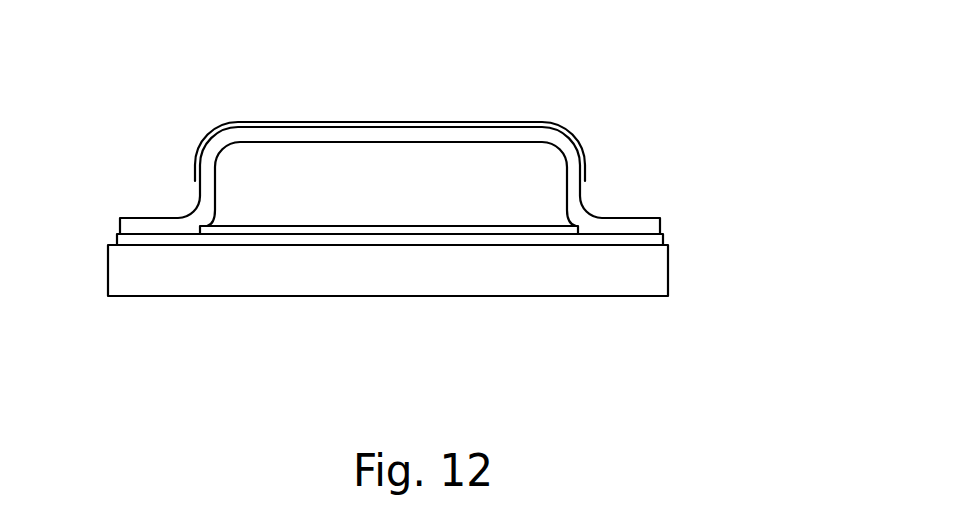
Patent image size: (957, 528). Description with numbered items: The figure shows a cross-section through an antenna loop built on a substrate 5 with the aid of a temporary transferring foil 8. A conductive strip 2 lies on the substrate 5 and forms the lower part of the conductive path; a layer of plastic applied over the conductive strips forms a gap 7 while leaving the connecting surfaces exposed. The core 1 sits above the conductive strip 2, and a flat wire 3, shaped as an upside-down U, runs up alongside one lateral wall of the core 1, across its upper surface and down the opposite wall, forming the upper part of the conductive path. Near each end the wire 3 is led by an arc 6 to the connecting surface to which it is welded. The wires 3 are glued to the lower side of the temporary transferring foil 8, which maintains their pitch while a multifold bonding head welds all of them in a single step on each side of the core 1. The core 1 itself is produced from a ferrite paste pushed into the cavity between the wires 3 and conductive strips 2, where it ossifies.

The core 1 is at (243, 170).
The conductive strip 2 is at (647, 240).
The wire 3 is at (578, 202).
The substrate 5 is at (622, 278).
The arc 6 is at (188, 213).
The gap 7 is at (465, 230).
The temporary transferring foil 8 is at (582, 143).